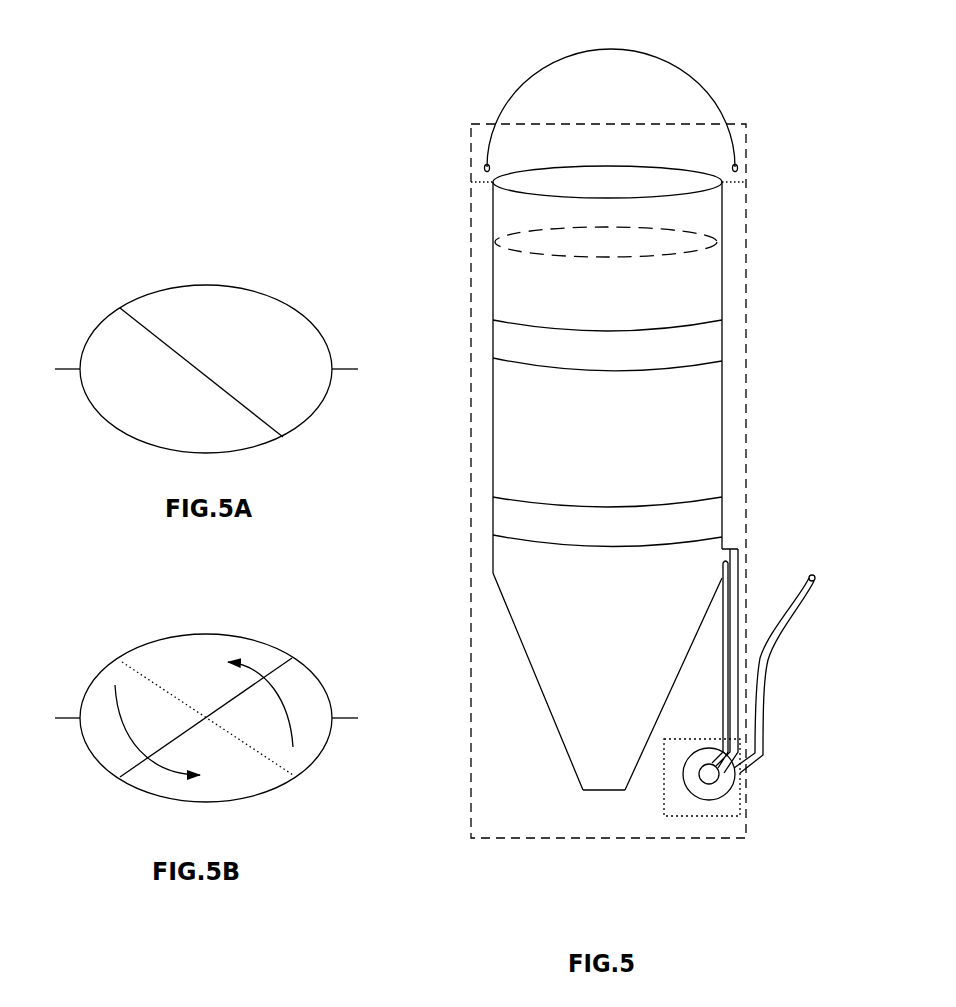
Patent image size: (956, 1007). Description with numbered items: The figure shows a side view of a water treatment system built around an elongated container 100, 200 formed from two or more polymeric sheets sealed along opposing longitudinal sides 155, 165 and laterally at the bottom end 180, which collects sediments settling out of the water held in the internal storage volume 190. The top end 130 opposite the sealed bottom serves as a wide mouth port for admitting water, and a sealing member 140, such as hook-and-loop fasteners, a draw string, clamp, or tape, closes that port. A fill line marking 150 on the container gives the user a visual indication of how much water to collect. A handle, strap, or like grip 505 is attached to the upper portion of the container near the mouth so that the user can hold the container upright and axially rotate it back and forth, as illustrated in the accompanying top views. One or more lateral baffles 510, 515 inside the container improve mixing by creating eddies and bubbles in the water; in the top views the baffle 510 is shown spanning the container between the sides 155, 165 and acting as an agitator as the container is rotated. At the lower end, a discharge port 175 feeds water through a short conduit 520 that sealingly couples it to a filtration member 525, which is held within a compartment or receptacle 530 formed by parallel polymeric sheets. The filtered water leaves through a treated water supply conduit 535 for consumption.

In FIG. 5, the elongated container 100 is at (228, 45).
In FIG. 5, the elongated container 200 is at (290, 90).
In FIG. 5, the top end 130 is at (565, 124).
In FIG. 5, the sealing member 140 is at (470, 182).
In FIG. 5, the fill line marking 150 is at (493, 243).
In FIG. 5, the longitudinal side 155 is at (471, 822).
In FIG. 5A, the longitudinal side 155 is at (64, 369).
In FIG. 5B, the longitudinal side 155 is at (72, 718).
In FIG. 5, the longitudinal side 165 is at (746, 446).
In FIG. 5A, the longitudinal side 165 is at (341, 371).
In FIG. 5B, the longitudinal side 165 is at (343, 721).
In FIG. 5, the discharge port 175 is at (723, 550).
In FIG. 5, the bottom end 180 is at (607, 792).
In FIG. 5, the internal storage volume 190 is at (617, 445).
In FIG. 5, the grip 505 is at (607, 49).
In FIG. 5, the lateral baffle 510 is at (507, 348).
In FIG. 5A, the lateral baffle 510 is at (158, 338).
In FIG. 5B, the lateral baffle 510 is at (138, 768).
In FIG. 5, the lateral baffle 515 is at (510, 527).
In FIG. 5, the short conduit 520 is at (739, 606).
In FIG. 5, the filtration member 525 is at (703, 800).
In FIG. 5, the receptacle 530 is at (716, 818).
In FIG. 5, the treated water supply conduit 535 is at (770, 645).